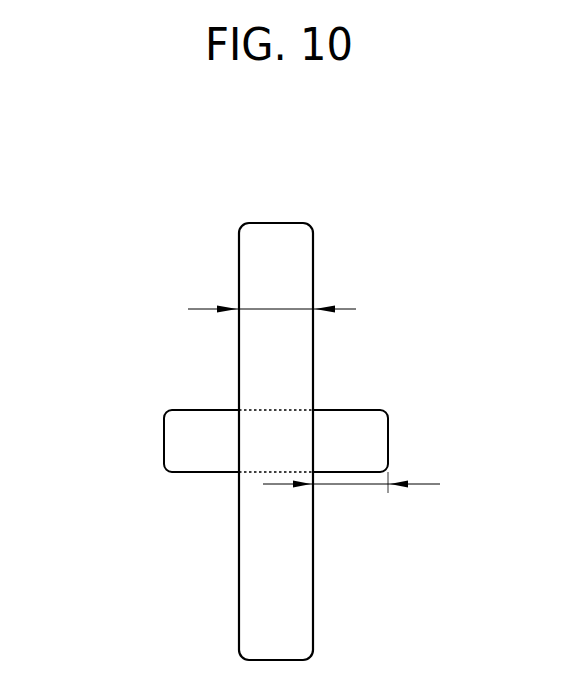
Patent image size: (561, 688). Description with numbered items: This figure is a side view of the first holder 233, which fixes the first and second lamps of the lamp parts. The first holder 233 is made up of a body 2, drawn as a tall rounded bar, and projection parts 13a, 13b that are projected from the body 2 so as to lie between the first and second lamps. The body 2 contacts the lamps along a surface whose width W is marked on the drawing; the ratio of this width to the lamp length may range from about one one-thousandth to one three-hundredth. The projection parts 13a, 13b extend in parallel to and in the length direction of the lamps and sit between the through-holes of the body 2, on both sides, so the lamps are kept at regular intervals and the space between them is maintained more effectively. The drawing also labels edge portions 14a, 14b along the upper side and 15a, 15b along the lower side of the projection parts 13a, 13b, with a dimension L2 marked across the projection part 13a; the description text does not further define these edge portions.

The body 2 is at (278, 247).
The first holder 233 is at (458, 147).
The projection part 13a is at (390, 440).
The projection part 13b is at (163, 440).
The first upper edge 14a is at (353, 409).
The second upper edge 14b is at (198, 409).
The first lower edge 15a is at (370, 474).
The second lower edge 15b is at (198, 474).